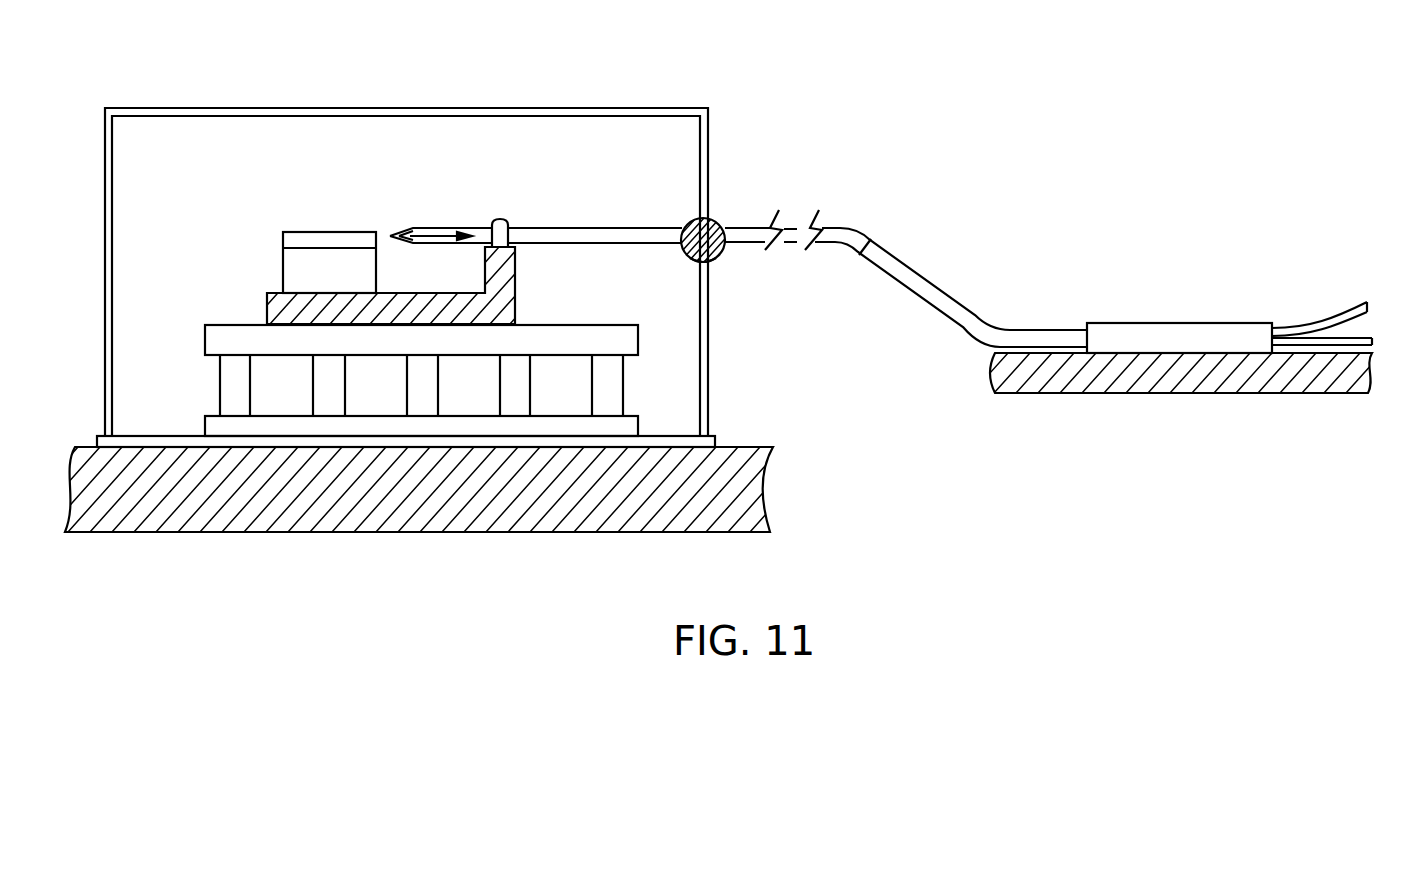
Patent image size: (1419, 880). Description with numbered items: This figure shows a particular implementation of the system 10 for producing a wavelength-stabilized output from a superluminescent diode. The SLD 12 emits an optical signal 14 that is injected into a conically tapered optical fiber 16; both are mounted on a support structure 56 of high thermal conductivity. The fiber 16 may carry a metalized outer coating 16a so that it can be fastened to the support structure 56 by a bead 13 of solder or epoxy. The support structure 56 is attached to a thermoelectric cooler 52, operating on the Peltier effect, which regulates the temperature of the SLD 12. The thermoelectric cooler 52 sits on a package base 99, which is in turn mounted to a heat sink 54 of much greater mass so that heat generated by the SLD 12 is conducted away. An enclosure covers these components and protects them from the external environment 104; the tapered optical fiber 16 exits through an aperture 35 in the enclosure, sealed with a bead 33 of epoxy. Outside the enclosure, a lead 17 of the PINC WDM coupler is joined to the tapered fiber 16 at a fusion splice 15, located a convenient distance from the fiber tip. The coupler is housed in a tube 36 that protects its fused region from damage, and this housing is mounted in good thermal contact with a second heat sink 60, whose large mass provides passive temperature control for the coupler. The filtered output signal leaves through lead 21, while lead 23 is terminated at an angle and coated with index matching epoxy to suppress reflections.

The external environment 104 is at (207, 70).
The system 10 is at (847, 112).
The superluminescent diode 12 is at (283, 270).
The bead of solder or epoxy 13 is at (498, 218).
The optical signal 14 is at (432, 240).
The conically tapered optical fiber 16 is at (608, 242).
The metalized outer coating 16a is at (555, 228).
The bead of epoxy 33 is at (717, 223).
The aperture 35 is at (710, 260).
The fusion splice 15 is at (861, 248).
The lead 17 is at (980, 318).
The tube 36 is at (1146, 332).
The lead 21 is at (1358, 306).
The lead 23 is at (1368, 337).
The heat sink 60 is at (990, 375).
The support structure 56 is at (500, 290).
The thermoelectric cooler 52 is at (643, 325).
The package base 99 is at (163, 436).
The heat sink 54 is at (745, 491).